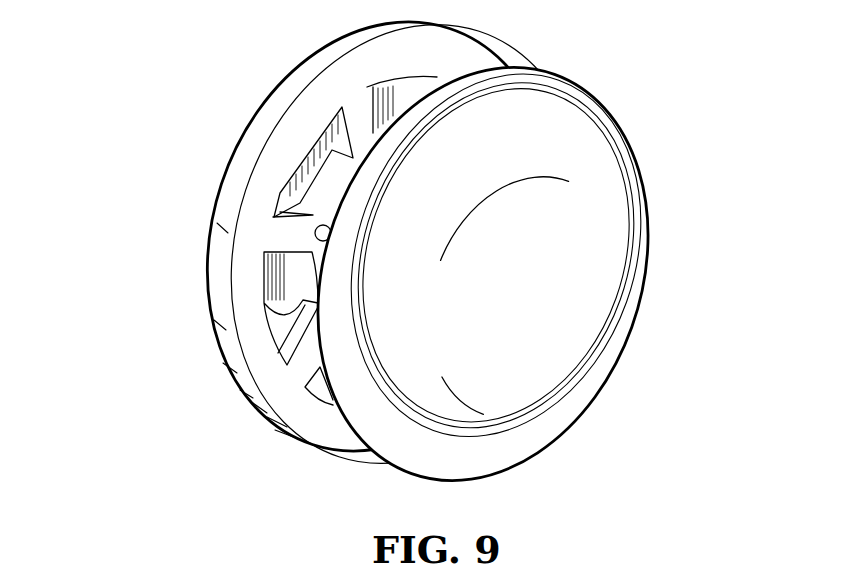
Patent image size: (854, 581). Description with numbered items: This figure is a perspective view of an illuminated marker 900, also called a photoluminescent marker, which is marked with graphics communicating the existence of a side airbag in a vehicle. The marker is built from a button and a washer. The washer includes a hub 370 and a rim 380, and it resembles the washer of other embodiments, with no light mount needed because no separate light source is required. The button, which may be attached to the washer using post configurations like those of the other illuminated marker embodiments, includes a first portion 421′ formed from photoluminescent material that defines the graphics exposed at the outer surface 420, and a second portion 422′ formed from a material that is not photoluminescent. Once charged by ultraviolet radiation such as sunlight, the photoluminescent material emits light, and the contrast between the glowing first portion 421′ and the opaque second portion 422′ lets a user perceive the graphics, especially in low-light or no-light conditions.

The illuminated marker 900 is at (622, 412).
The rim 380 is at (217, 283).
The hub 370 is at (303, 285).
The first portion 421′ is at (560, 118).
The outer surface 420 is at (597, 238).
The second portion 422′ is at (557, 298).